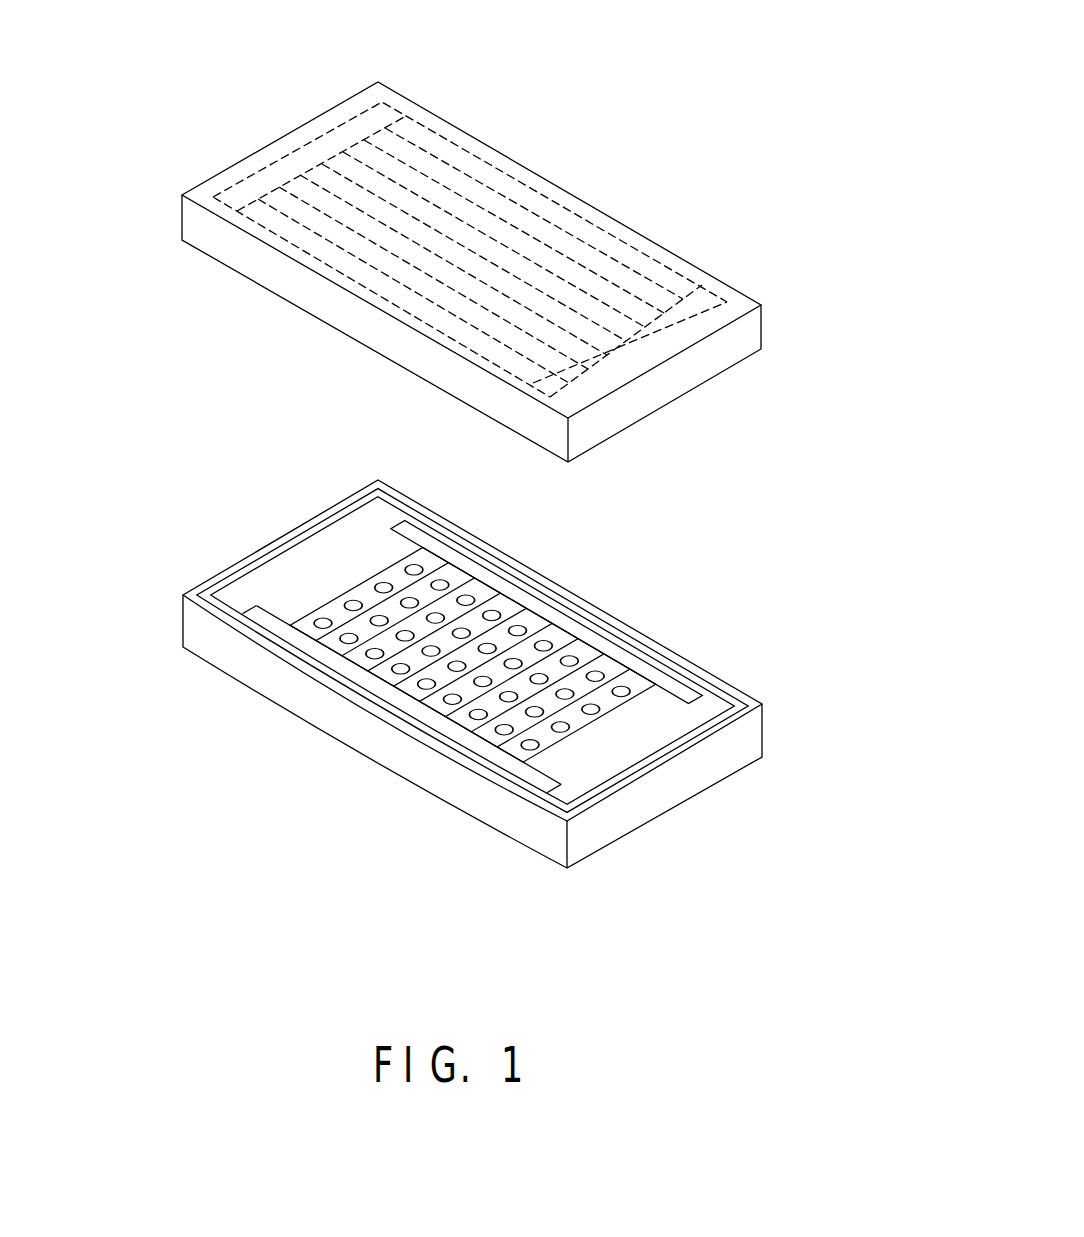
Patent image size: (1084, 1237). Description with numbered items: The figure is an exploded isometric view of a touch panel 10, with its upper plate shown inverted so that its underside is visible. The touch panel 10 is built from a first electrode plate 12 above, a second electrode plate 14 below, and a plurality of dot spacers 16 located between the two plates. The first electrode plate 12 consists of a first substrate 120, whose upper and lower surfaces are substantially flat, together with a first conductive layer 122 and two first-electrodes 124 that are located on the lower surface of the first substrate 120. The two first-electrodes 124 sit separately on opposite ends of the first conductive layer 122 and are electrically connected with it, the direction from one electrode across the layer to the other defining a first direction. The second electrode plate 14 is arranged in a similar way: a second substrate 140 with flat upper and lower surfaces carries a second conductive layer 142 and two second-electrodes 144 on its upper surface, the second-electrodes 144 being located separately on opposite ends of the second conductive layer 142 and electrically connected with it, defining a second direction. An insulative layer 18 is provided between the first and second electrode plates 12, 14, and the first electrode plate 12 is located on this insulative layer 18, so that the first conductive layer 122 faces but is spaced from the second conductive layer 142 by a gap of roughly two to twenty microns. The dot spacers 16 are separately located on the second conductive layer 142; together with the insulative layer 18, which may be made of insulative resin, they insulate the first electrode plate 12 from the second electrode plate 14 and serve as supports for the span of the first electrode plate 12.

The touch panel 10 is at (478, 20).
The first electrode plate 12 is at (678, 218).
The first substrate 120 is at (747, 332).
The first conductive layer 122 is at (485, 198).
The first-electrodes 124 is at (307, 150).
The second electrode plate 14 is at (655, 845).
The second substrate 140 is at (437, 779).
The second conductive layer 142 is at (352, 590).
The second-electrodes 144 is at (522, 592).
The dot spacers 16 is at (623, 688).
The insulative layer 18 is at (350, 703).